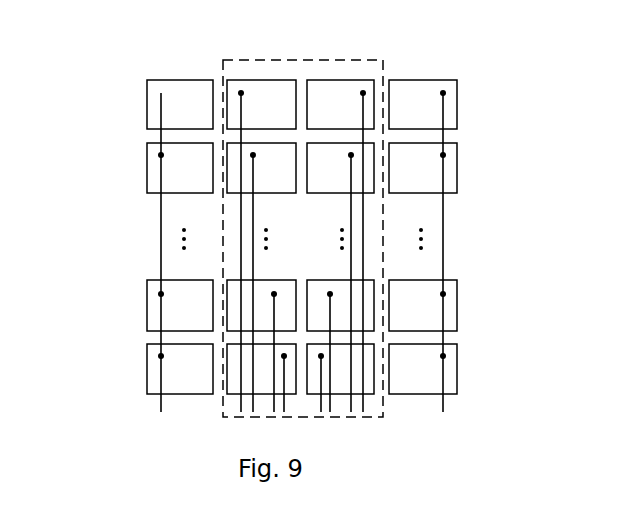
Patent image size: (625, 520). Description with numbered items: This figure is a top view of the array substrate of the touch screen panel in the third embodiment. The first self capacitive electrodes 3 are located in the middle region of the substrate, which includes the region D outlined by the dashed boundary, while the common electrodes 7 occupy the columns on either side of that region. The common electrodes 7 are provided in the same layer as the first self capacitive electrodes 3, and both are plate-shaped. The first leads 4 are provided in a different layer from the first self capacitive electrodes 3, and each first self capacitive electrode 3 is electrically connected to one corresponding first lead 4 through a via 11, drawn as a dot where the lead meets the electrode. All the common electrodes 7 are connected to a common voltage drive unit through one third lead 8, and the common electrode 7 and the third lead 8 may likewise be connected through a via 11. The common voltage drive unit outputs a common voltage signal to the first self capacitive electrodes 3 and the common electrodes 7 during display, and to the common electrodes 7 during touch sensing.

The first self capacitive electrode 3 is at (417, 164).
The first lead 4 is at (443, 252).
The common electrode 7 is at (139, 163).
The third lead 8 is at (113, 252).
The via 11 is at (293, 210).
The region D is at (320, 208).